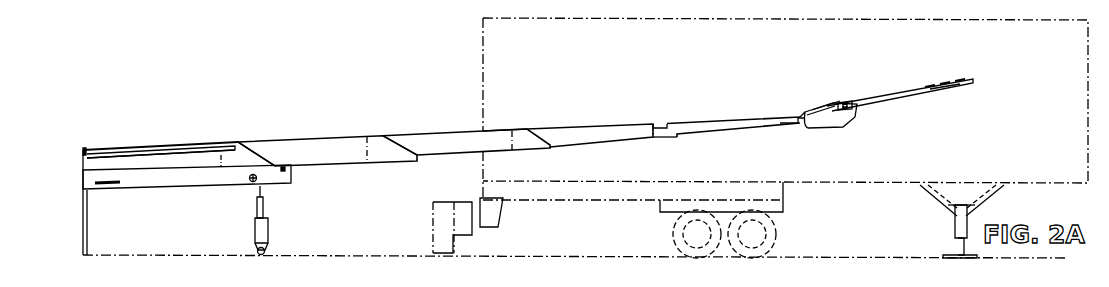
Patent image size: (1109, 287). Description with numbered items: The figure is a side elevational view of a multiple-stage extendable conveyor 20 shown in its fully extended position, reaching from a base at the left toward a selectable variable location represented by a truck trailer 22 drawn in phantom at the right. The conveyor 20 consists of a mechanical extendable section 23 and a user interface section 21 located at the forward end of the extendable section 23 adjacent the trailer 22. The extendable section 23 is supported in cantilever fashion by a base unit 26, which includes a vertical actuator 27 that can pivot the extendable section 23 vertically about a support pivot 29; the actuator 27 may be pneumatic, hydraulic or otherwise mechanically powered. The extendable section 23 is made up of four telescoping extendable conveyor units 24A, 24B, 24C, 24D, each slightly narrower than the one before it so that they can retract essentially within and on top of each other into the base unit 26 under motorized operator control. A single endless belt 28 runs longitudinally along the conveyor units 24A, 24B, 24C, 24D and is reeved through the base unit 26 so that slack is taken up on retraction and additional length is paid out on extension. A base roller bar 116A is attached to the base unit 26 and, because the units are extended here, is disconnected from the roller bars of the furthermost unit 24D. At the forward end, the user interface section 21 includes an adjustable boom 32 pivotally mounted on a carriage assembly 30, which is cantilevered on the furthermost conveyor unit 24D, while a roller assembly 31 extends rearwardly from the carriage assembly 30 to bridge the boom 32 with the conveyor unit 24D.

The multiple-stage extendable conveyor 20 is at (146, 105).
The user interface section 21 is at (820, 92).
The truck trailer 22 is at (483, 52).
The mechanical extendable section 23 is at (505, 110).
The extendable conveyor unit 24A is at (301, 148).
The extendable conveyor unit 24B is at (432, 140).
The extendable conveyor unit 24C is at (577, 127).
The extendable conveyor unit 24D is at (700, 120).
The base unit 26 is at (172, 192).
The vertical actuator 27 is at (266, 227).
The endless belt 28 is at (348, 137).
The support pivot 29 is at (83, 152).
The carriage assembly 30 is at (817, 125).
The roller assembly 31 is at (812, 112).
The adjustable boom 32 is at (887, 89).
The base roller bar 116A is at (176, 150).